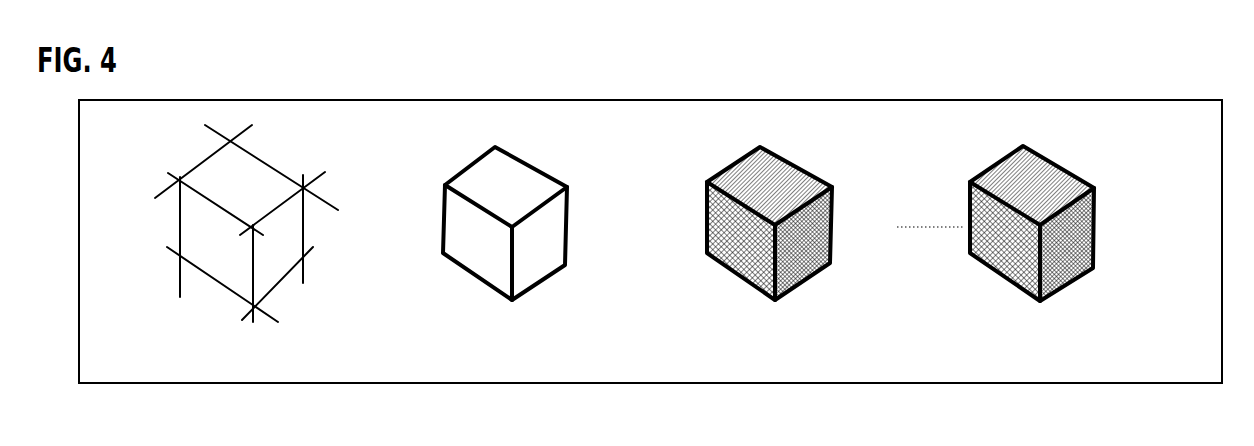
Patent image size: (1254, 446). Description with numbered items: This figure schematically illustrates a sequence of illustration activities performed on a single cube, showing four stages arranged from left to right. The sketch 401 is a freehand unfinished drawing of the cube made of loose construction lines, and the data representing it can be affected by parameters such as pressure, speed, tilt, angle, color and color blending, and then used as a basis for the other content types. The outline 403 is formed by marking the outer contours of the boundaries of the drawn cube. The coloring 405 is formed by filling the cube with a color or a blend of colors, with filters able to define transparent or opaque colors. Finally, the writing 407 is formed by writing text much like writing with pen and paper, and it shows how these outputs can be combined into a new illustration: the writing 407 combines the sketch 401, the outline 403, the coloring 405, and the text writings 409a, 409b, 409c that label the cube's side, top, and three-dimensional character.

The sketch 401 is at (203, 273).
The outline 403 is at (473, 275).
The coloring 405 is at (732, 272).
The writing 407 is at (1003, 275).
The writing 409a is at (915, 185).
The writing 409b is at (1112, 140).
The writing 409c is at (1087, 310).